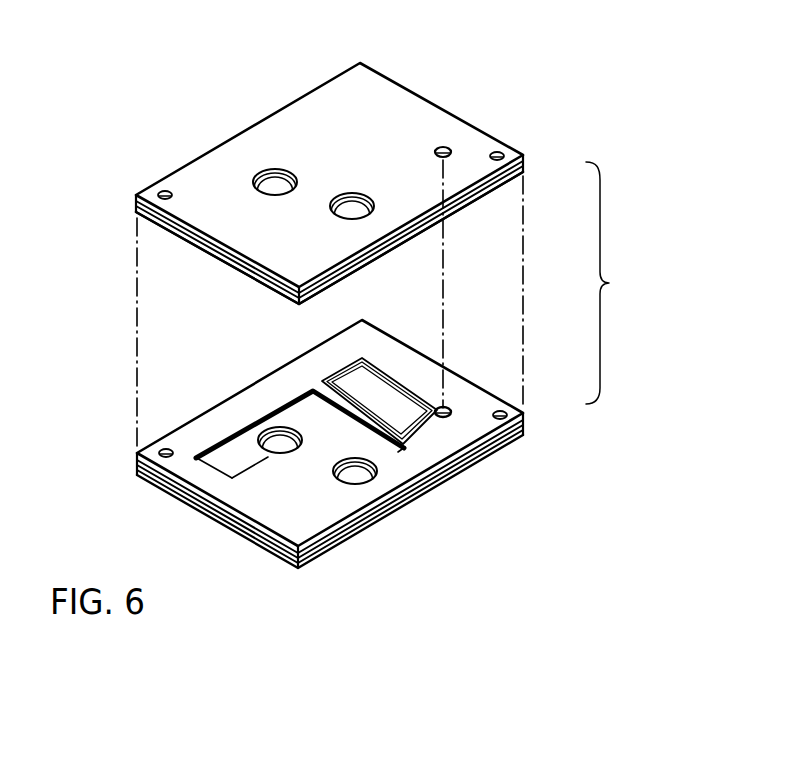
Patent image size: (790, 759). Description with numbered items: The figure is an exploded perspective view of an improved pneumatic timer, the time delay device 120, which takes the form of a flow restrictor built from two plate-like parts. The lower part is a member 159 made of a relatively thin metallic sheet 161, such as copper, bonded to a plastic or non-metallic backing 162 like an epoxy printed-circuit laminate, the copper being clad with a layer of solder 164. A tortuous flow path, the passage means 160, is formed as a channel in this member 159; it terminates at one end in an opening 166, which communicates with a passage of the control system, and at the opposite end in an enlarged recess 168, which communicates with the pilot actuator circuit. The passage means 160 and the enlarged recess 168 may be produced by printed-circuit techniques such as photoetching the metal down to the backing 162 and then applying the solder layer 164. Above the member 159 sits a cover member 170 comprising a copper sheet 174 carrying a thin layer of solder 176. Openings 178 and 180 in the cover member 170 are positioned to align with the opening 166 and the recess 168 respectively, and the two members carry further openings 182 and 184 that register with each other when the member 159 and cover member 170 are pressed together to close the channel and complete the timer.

The time delay device 120 is at (610, 283).
The member 159 is at (330, 444).
The passage means 160 is at (413, 450).
The metallic sheet 161 is at (519, 428).
The backing 162 is at (377, 519).
The solder layer 164 is at (318, 549).
The opening 166 is at (261, 421).
The enlarged recess 168 is at (445, 410).
The cover member 170 is at (180, 163).
The copper sheet 174 is at (526, 150).
The solder layer 176 is at (523, 166).
The opening 178 is at (264, 171).
The opening 180 is at (442, 150).
The opening 182 is at (383, 471).
The opening 184 is at (370, 213).